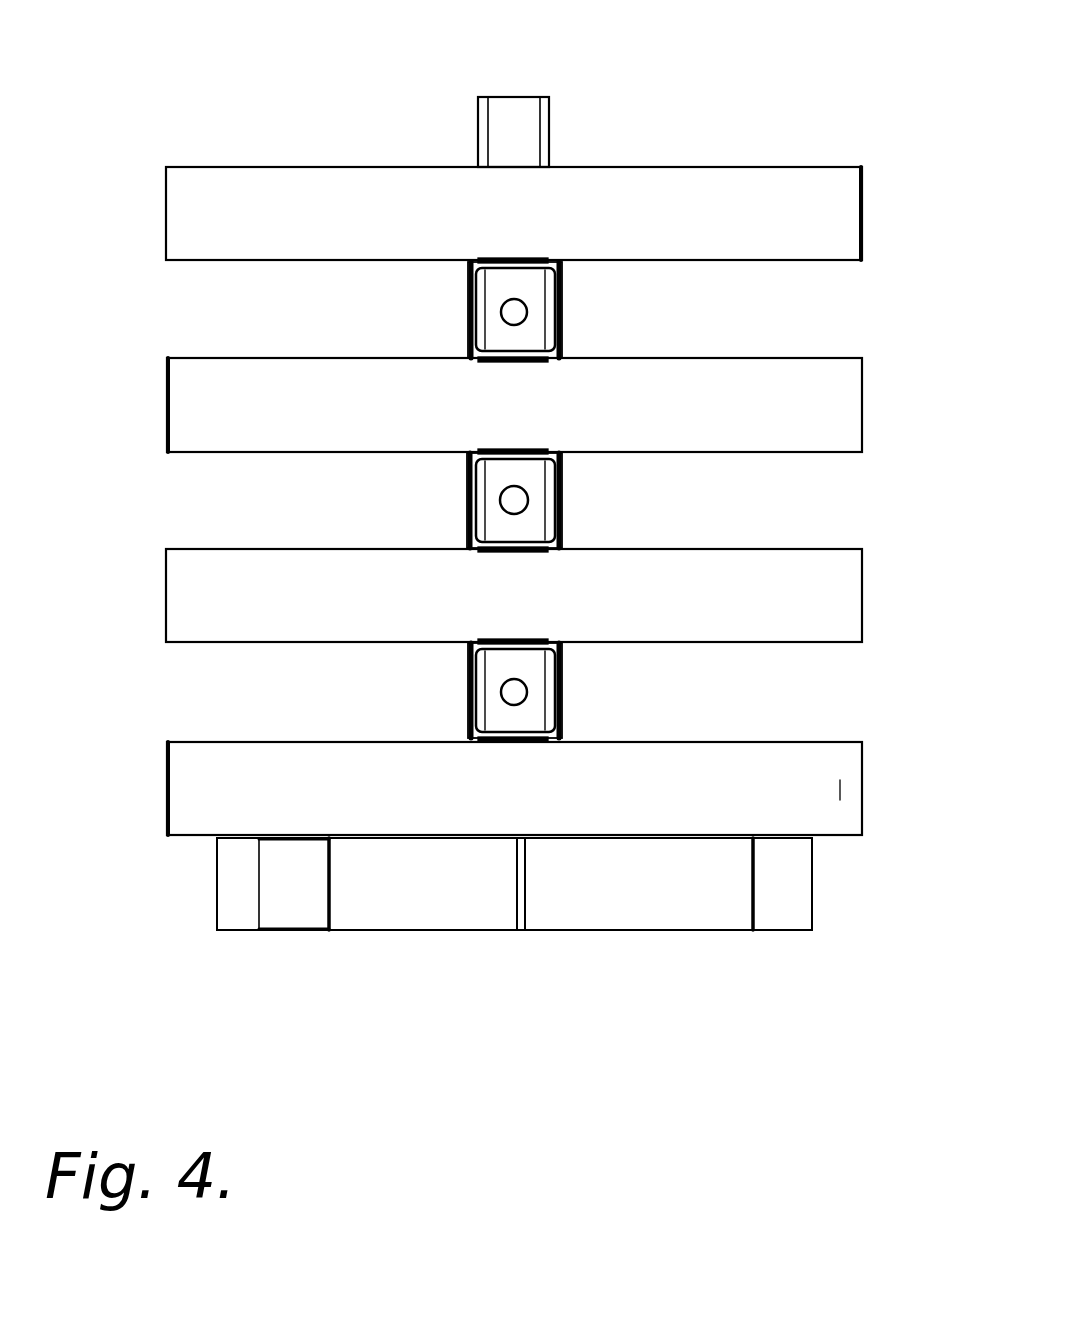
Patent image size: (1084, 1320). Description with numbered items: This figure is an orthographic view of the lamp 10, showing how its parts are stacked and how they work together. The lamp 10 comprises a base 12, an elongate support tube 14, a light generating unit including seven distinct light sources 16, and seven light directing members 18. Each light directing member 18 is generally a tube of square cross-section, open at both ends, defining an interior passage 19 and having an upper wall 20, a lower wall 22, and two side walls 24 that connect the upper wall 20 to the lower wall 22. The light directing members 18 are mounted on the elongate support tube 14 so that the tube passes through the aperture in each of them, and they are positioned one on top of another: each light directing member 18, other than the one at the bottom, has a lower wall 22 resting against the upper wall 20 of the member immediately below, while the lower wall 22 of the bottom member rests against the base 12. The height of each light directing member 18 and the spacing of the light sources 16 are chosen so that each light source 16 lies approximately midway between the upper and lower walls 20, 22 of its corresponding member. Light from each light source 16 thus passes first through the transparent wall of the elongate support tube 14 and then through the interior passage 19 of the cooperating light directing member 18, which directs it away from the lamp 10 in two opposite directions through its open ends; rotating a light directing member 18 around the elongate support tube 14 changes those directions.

The lamp 10 is at (783, 88).
The base 12 is at (620, 908).
The elongate support tube 14 is at (549, 120).
The light source 16 is at (515, 315).
The light directing member 18 is at (193, 230).
The interior passage 19 is at (533, 290).
The upper wall 20 is at (823, 165).
The lower wall 22 is at (837, 265).
The side wall 24 is at (468, 335).